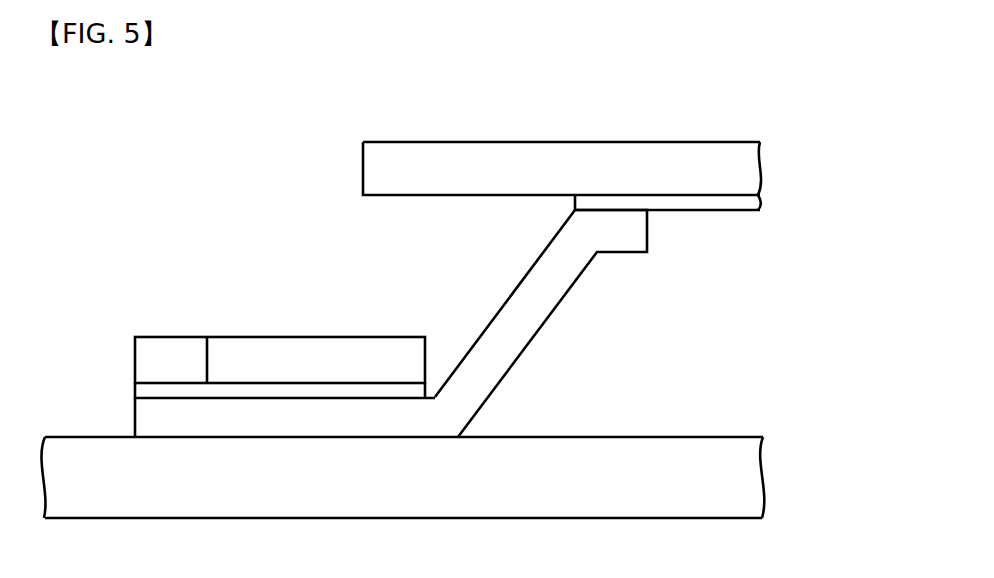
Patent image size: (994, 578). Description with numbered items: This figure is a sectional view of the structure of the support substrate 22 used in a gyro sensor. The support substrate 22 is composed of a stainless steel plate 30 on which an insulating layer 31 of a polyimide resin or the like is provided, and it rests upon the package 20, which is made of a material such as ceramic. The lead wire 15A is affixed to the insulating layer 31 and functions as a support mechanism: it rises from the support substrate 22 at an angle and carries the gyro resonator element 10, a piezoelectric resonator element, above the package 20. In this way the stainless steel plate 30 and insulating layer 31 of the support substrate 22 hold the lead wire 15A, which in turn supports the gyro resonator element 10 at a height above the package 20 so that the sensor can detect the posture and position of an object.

The gyro resonator element 10 is at (618, 165).
The package 20 is at (718, 487).
The support substrate 22 is at (285, 303).
The stainless steel plate 30 is at (276, 350).
The insulating layer 31 is at (347, 390).
The lead wire 15A is at (432, 418).